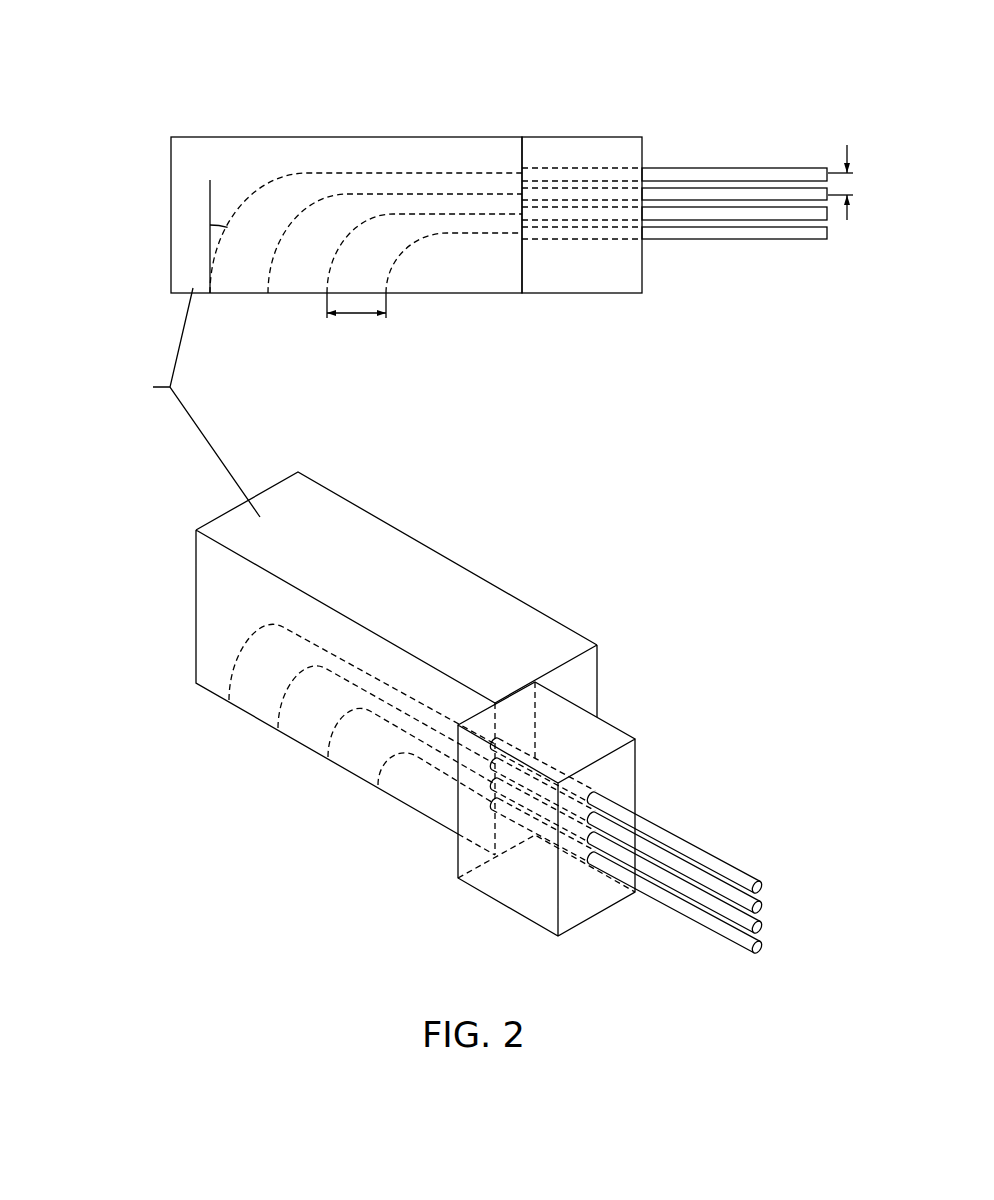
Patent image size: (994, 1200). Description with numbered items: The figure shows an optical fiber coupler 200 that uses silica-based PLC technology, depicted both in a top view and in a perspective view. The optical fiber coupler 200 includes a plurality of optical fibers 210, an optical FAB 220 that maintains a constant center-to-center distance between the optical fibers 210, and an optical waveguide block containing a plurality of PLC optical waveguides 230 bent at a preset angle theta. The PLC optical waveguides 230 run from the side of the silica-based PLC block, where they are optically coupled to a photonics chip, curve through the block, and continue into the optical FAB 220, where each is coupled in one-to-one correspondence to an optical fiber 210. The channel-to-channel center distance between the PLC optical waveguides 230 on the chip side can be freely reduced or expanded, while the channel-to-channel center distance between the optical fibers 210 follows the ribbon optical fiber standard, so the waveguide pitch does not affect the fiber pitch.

The optical fiber coupler 200 is at (815, 50).
The optical fiber 210 is at (712, 238).
The optical FAB 220 is at (627, 283).
The PLC optical waveguide 230 is at (403, 255).